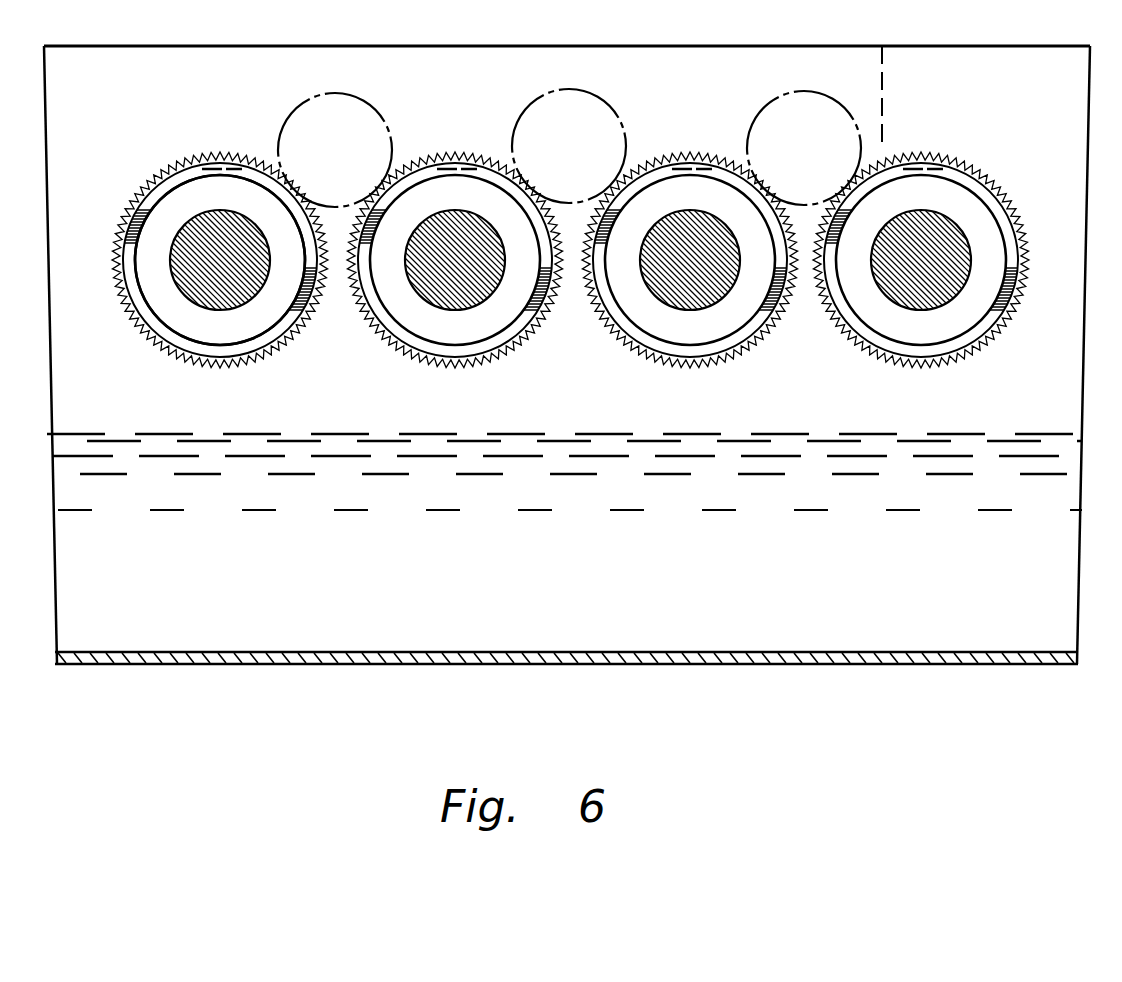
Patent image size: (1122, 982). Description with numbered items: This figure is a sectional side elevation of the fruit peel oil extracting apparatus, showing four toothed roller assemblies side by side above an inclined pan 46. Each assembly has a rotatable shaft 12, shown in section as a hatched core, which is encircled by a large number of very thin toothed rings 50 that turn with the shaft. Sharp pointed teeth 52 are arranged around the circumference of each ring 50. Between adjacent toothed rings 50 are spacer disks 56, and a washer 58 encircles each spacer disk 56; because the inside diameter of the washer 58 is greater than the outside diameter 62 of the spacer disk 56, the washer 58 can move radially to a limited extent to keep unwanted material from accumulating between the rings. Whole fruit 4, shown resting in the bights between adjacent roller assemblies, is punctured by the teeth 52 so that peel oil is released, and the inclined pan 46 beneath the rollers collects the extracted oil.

The fruit 4 is at (348, 95).
The shaft 12 is at (212, 290).
The inclined pan 46 is at (320, 652).
The toothed ring 50 is at (495, 338).
The teeth 52 is at (270, 350).
The spacer disk 56 is at (152, 257).
The washer 58 is at (992, 187).
The outside diameter of spacer disk 62 is at (245, 342).